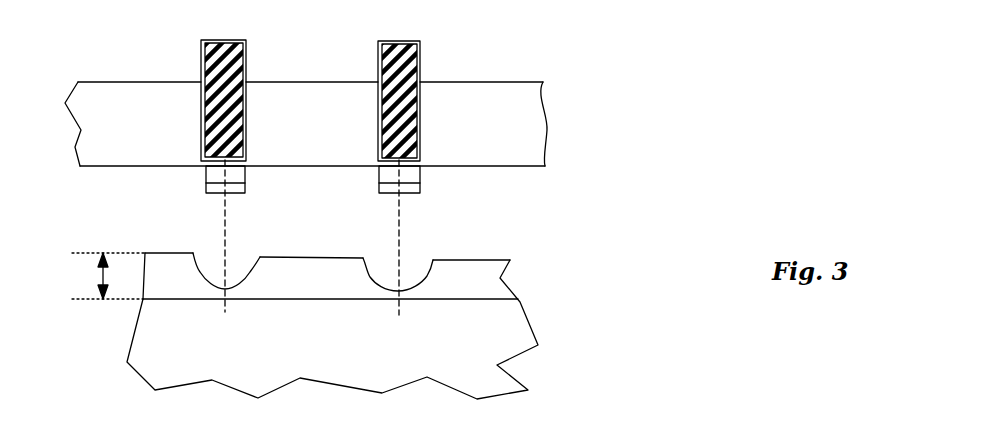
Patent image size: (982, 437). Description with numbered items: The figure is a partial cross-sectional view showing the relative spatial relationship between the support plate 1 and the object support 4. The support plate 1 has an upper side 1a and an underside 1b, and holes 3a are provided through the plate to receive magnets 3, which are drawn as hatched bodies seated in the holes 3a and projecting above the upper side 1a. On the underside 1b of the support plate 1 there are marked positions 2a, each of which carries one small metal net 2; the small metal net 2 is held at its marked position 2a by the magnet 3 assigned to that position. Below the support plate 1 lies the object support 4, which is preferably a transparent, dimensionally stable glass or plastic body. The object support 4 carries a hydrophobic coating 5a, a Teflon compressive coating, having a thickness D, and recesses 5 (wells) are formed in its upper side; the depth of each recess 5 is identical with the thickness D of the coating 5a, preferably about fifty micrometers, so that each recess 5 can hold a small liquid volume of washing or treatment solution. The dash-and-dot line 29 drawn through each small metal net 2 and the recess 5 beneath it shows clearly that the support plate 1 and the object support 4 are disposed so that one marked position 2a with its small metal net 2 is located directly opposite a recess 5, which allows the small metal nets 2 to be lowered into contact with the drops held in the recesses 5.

The support plate 1 is at (525, 125).
The upper side of support plate 1a is at (487, 82).
The underside of support plate 1b is at (501, 168).
The small metal net 2 is at (213, 190).
The marked position 2a is at (379, 172).
The magnet 3 is at (243, 40).
The hole 3a is at (201, 136).
The object support 4 is at (509, 343).
The recess 5 is at (368, 255).
The hydrophobic coating 5a is at (468, 282).
The dash-and-dot line 29 is at (400, 233).
The thickness D is at (101, 283).